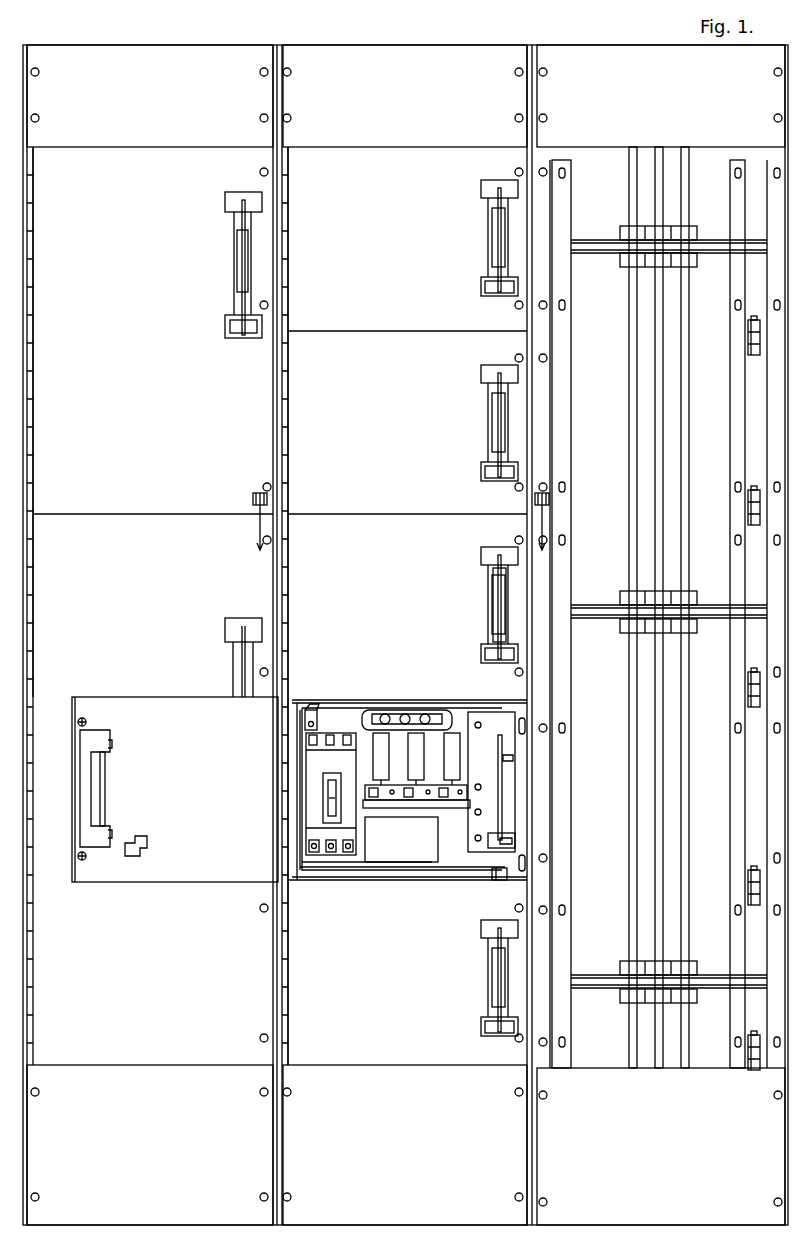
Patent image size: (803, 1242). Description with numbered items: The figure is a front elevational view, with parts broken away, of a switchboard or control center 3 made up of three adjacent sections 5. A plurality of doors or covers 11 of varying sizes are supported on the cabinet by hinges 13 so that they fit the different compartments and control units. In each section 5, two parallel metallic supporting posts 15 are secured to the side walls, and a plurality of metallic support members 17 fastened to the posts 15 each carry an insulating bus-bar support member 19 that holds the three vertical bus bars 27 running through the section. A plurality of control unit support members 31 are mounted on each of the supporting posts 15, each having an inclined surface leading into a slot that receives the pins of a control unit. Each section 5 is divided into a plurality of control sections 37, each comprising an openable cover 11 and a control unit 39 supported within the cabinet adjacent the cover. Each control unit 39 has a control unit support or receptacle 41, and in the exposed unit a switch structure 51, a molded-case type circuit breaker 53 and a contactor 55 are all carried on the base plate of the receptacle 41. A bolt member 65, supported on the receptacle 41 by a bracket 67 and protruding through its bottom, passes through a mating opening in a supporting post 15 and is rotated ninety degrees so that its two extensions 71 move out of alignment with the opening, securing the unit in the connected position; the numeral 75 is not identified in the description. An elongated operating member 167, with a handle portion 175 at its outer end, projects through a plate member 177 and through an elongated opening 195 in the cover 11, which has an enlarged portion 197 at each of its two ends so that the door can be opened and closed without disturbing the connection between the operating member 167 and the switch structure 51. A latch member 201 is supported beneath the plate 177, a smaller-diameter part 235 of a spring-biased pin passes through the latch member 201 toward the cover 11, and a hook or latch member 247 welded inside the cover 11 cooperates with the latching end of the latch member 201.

The switchboard or control center 3 is at (525, 29).
The sections 5 is at (149, 36).
The covers 11 is at (133, 159).
The hinges 13 is at (33, 454).
The supporting posts 15 is at (566, 809).
The support members 17 is at (578, 254).
The insulating bus-bar support member 19 is at (624, 227).
The vertical bus bars 27 is at (636, 427).
The control unit support members 31 is at (755, 316).
The control sections 37 is at (155, 359).
The control unit 39 is at (465, 864).
The control unit support or receptacle 41 is at (330, 867).
The switch structure 51 is at (410, 779).
The molded-case type circuit breaker 53 is at (339, 769).
The contactor 55 is at (392, 862).
The bolt member 65 is at (307, 704).
The bracket 67 is at (330, 708).
The extensions 71 is at (389, 706).
The interlock bar 75 is at (418, 706).
The elongated operating member 167 is at (238, 245).
The handle portion 175 is at (514, 842).
The plate member 177 is at (514, 768).
The elongated opening 195 is at (105, 772).
The enlarged portion 197 is at (108, 742).
The latch member 201 is at (464, 837).
The part of smaller diameter 235 is at (480, 860).
The hook or latch member 247 is at (147, 852).